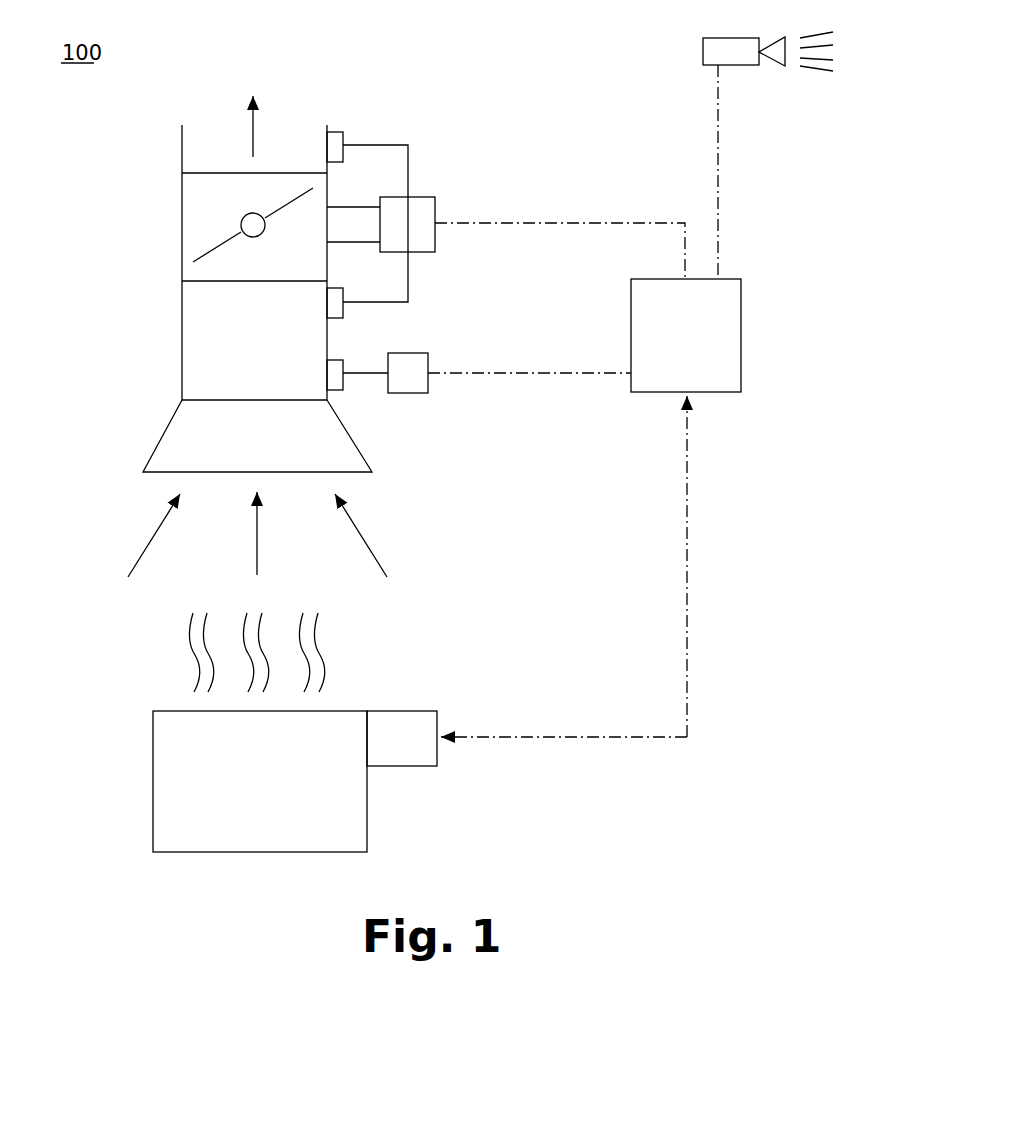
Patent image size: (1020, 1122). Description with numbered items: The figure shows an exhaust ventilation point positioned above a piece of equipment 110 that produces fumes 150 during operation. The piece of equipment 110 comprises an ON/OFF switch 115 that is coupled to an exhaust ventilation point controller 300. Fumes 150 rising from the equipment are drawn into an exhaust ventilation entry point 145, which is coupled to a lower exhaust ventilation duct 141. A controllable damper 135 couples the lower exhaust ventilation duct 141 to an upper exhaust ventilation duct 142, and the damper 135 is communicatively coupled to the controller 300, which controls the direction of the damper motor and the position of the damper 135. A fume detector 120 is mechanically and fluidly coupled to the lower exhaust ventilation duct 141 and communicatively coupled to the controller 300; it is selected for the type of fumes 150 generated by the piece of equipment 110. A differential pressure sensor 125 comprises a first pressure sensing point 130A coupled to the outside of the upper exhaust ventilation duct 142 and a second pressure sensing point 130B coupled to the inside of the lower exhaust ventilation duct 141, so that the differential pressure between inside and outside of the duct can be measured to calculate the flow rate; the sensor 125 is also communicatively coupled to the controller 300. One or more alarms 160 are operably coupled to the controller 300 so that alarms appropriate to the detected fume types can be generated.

The piece of equipment 110 is at (153, 745).
The ON/OFF switch 115 is at (400, 711).
The fume detector 120 is at (418, 353).
The differential pressure sensor 125 is at (420, 197).
The first pressure sensing point 130A is at (343, 134).
The second pressure sensing point 130B is at (344, 312).
The controllable damper 135 is at (182, 215).
The lower exhaust ventilation duct 141 is at (182, 347).
The upper exhaust ventilation duct 142 is at (182, 138).
The exhaust ventilation entry point 145 is at (158, 433).
The fumes 150 is at (190, 670).
The alarm 160 is at (710, 38).
The exhaust ventilation point controller 300 is at (730, 279).